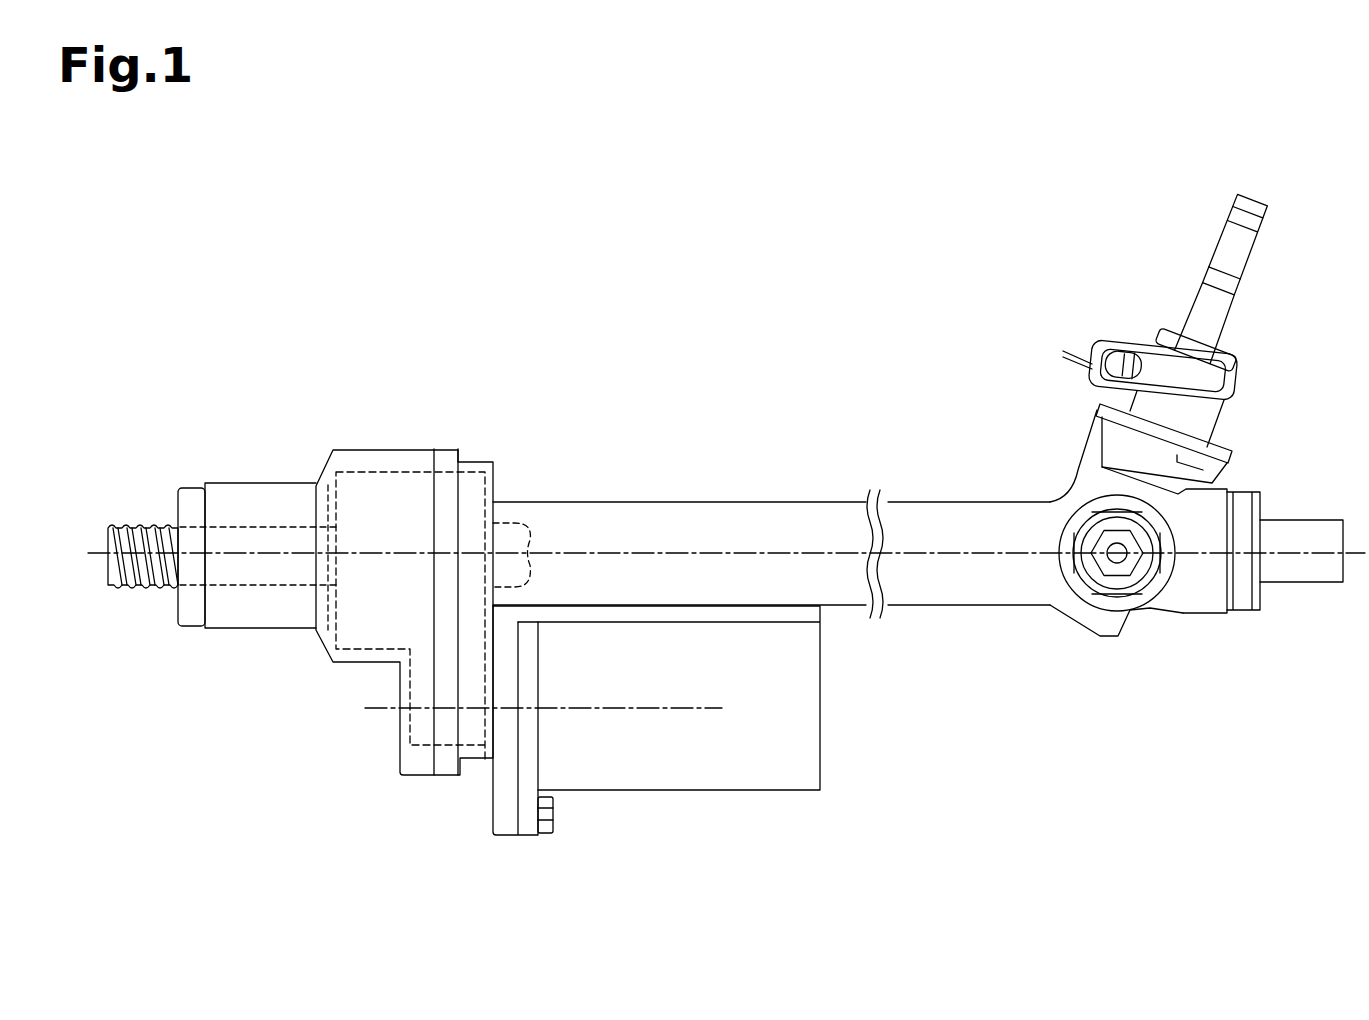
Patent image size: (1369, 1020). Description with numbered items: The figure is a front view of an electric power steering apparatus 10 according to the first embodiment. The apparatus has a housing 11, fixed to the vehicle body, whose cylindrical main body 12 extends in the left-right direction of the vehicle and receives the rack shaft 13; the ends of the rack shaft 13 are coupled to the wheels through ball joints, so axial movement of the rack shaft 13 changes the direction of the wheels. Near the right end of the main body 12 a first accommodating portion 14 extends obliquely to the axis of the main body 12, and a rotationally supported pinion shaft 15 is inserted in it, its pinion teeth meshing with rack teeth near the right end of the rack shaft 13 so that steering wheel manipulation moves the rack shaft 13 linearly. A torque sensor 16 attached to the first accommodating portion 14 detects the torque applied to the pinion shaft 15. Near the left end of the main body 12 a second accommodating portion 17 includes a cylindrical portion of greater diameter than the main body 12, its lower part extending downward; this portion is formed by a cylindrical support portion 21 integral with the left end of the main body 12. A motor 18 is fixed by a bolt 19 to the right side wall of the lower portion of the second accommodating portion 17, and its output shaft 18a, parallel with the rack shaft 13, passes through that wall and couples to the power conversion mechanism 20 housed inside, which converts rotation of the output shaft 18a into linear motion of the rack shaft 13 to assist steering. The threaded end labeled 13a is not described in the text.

The electric power steering apparatus 10 is at (184, 238).
The housing 11 is at (683, 501).
The main body 12 is at (608, 502).
The rack shaft 13 is at (1289, 518).
The threaded end of rack shaft 13a is at (146, 589).
The first accommodating portion 14 is at (1100, 430).
The pinion shaft 15 is at (1240, 280).
The torque sensor 16 is at (259, 632).
The second accommodating portion 17 is at (432, 449).
The motor 18 is at (696, 794).
The output shaft 18a is at (489, 757).
The bolt 19 is at (553, 810).
The power conversion mechanism 20 is at (357, 470).
The support portion 21 is at (130, 520).